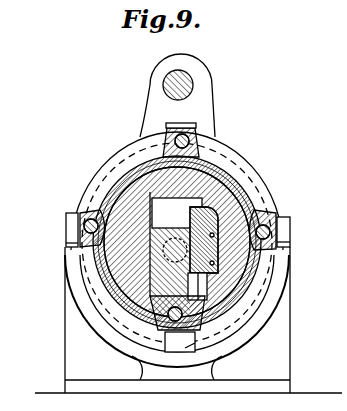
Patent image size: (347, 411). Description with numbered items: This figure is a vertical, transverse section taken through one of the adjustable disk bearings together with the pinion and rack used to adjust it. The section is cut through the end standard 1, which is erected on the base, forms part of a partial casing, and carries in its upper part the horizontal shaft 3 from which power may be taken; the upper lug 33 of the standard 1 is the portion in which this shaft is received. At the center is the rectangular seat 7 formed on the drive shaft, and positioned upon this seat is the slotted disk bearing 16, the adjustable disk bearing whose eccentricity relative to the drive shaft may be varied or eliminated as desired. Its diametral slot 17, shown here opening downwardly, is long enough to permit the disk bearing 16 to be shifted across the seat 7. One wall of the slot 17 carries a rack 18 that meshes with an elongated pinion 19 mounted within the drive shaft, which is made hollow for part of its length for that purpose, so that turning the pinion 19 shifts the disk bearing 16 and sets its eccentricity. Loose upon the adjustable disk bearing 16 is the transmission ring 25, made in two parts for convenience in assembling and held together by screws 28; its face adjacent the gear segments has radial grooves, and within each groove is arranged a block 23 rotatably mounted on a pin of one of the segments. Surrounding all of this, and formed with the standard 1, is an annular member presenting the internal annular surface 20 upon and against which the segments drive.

The end standard 1 is at (206, 112).
The horizontal shaft 3 is at (192, 80).
The rectangular seat 7 is at (160, 306).
The slotted disk bearing 16 is at (241, 191).
The diametral slot 17 is at (153, 200).
The rack 18 is at (226, 172).
The elongated pinion 19 is at (178, 238).
The annular surface 20 is at (122, 322).
The block 23 is at (173, 125).
The transmission ring 25 is at (140, 160).
The screws 28 is at (194, 141).
The hanger lug 33 is at (154, 79).